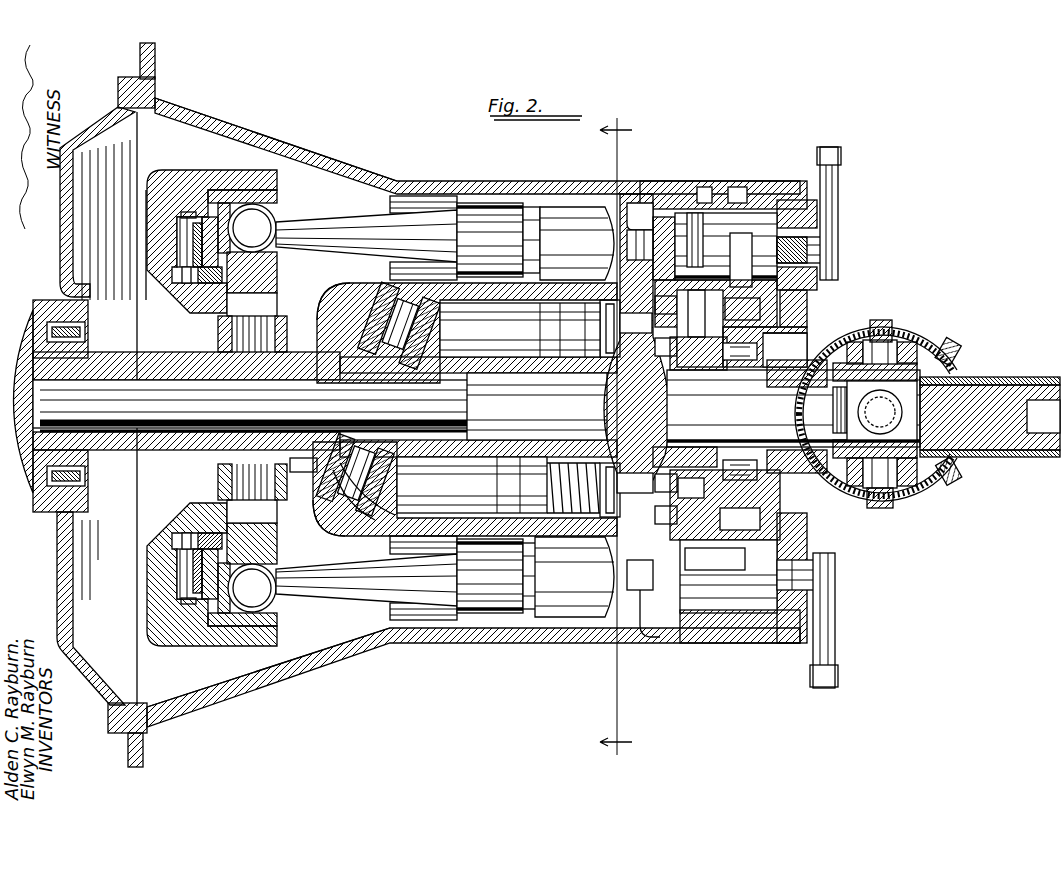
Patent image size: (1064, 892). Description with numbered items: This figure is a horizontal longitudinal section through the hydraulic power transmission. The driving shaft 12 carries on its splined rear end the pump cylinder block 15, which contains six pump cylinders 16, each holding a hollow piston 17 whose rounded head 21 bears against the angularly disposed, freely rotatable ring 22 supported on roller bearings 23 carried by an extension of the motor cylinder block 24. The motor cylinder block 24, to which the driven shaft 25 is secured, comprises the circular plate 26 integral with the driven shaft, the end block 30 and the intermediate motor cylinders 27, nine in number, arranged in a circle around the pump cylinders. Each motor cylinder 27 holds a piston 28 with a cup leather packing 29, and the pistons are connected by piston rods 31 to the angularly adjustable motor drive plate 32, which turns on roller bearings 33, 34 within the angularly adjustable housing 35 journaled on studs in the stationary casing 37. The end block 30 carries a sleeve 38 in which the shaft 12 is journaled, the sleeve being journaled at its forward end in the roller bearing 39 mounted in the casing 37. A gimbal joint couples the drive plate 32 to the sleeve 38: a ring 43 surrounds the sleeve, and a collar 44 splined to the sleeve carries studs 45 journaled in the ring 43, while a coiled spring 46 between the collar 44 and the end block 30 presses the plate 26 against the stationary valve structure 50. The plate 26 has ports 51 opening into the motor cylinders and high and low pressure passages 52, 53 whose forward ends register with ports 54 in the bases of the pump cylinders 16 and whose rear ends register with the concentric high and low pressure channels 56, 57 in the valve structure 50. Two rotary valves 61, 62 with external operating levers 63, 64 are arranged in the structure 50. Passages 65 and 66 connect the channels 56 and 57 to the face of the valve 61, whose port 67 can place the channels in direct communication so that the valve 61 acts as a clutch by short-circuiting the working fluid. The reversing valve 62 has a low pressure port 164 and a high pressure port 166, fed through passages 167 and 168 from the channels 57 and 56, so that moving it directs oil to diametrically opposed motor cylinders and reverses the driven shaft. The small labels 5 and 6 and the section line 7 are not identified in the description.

The pin 5 is at (716, 275).
The pin 6 is at (742, 252).
The section line 7 is at (616, 441).
The shaft 12 is at (251, 405).
The pump cylinder block 15 is at (537, 406).
The pump cylinders 16 is at (570, 452).
The hollow piston 17 is at (498, 408).
The rounded heads 21 is at (412, 340).
The freely rotatable ring 22 is at (345, 512).
The roller bearings 23 is at (330, 496).
The motor cylinder block 24 is at (330, 301).
The driven shaft 25 is at (786, 408).
The circular plate 26 is at (640, 210).
The motor cylinders 27 is at (585, 196).
The piston 28 is at (498, 408).
The cup leather packing 29 is at (530, 590).
The end block 30 is at (318, 316).
The piston rods 31 is at (342, 228).
The motor drive plate 32 is at (241, 205).
The roller bearing 33 is at (183, 228).
The roller bearing 34 is at (198, 285).
The angularly adjustable housing 35 is at (165, 172).
The stationary casing 37 is at (340, 164).
The sleeve 38 is at (120, 362).
The roller bearing 39 is at (60, 300).
The ring 43 is at (218, 331).
The collar 44 is at (185, 353).
The studs 45 is at (212, 485).
The coiled spring 46 is at (300, 477).
The stationary valve structure 50 is at (782, 324).
The ports 51 is at (672, 200).
The high pressure passages 52 is at (636, 337).
The low pressure passages 53 is at (635, 482).
The ports 54 is at (606, 300).
The high pressure channel 56 is at (667, 409).
The low pressure channel 57 is at (667, 414).
The rotary valve 61 is at (738, 622).
The rotary valve 62 is at (746, 216).
The operating lever 63 is at (836, 624).
The operating lever 64 is at (839, 196).
The passage 65 is at (740, 519).
The passage 66 is at (725, 505).
The port 67 is at (748, 576).
The port 164 is at (702, 226).
The port 166 is at (792, 250).
The passage 167 is at (792, 298).
The passage 168 is at (782, 312).